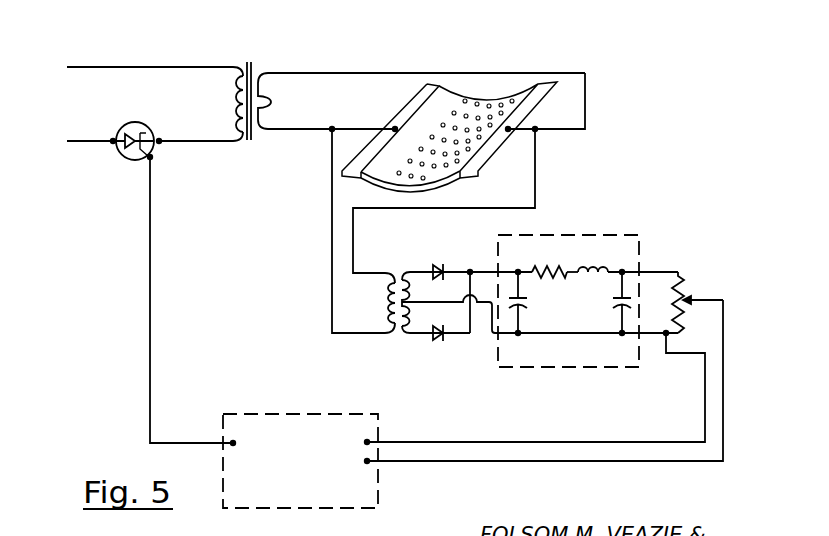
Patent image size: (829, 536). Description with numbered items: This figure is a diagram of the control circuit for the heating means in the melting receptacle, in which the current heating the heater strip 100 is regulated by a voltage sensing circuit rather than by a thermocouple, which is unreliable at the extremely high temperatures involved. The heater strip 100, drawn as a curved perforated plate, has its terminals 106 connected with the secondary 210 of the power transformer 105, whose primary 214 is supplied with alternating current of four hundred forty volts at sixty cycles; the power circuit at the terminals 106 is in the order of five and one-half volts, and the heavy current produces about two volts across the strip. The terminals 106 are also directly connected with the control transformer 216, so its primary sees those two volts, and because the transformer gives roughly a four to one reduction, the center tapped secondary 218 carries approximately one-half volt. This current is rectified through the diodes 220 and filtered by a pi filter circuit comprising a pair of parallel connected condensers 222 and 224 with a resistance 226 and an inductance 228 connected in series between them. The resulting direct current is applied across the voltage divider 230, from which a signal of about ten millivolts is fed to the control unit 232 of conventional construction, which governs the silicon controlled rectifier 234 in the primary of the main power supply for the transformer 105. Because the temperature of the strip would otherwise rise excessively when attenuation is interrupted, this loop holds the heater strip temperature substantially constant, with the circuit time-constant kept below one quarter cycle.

The heater strip 100 is at (458, 94).
The power transformer 105 is at (249, 58).
The terminals 106 is at (395, 126).
The secondary 210 is at (265, 72).
The primary 214 is at (236, 64).
The control transformer 216 is at (399, 337).
The center tapped secondary 218 is at (410, 270).
The diodes 220 is at (443, 262).
The condenser 222 is at (522, 298).
The condenser 224 is at (614, 300).
The resistance 226 is at (548, 265).
The inductance 228 is at (606, 265).
The voltage divider 230 is at (688, 300).
The control unit 232 is at (380, 407).
The silicon controlled rectifier 234 is at (128, 160).